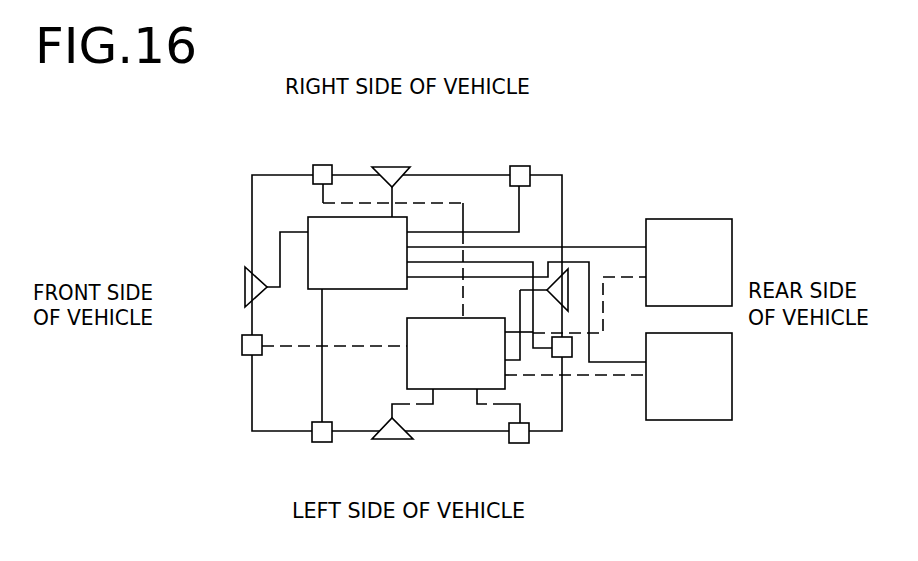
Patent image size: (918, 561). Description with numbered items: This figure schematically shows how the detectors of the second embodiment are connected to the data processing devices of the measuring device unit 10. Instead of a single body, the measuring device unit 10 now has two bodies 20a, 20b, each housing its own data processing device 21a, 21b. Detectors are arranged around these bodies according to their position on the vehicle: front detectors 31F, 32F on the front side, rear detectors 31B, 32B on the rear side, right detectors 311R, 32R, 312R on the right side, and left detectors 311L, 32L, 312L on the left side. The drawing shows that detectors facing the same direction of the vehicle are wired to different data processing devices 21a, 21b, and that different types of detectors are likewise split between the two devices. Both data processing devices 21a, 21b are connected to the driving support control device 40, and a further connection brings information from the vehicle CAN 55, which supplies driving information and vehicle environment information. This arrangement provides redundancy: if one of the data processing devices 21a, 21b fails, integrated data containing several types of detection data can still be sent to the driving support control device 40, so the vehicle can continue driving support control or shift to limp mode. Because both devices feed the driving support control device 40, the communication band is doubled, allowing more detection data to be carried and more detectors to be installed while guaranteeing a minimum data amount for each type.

The measuring device unit 10 is at (252, 199).
The body 20a is at (357, 253).
The data processing device 21a is at (395, 262).
The body 20b is at (456, 353).
The data processing device 21b is at (495, 363).
The driving support control device 40 is at (700, 271).
The vehicle CAN 55 is at (700, 386).
The right detector 311R is at (322, 165).
The right detector 32R is at (386, 168).
The right detector 312R is at (519, 168).
The rear detector 32B is at (572, 282).
The rear detector 31B is at (566, 352).
The front detector 32F is at (249, 287).
The front detector 31F is at (244, 345).
The left detector 311L is at (324, 443).
The left detector 32L is at (397, 440).
The left detector 312L is at (522, 443).